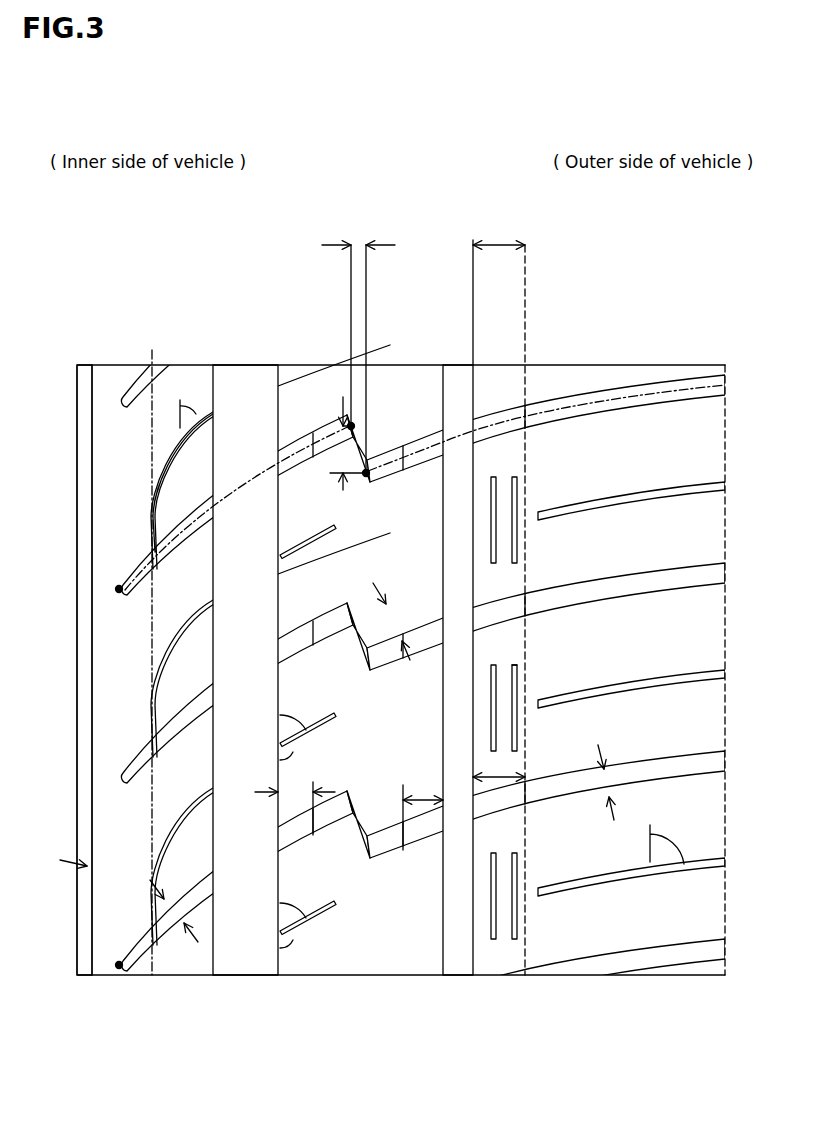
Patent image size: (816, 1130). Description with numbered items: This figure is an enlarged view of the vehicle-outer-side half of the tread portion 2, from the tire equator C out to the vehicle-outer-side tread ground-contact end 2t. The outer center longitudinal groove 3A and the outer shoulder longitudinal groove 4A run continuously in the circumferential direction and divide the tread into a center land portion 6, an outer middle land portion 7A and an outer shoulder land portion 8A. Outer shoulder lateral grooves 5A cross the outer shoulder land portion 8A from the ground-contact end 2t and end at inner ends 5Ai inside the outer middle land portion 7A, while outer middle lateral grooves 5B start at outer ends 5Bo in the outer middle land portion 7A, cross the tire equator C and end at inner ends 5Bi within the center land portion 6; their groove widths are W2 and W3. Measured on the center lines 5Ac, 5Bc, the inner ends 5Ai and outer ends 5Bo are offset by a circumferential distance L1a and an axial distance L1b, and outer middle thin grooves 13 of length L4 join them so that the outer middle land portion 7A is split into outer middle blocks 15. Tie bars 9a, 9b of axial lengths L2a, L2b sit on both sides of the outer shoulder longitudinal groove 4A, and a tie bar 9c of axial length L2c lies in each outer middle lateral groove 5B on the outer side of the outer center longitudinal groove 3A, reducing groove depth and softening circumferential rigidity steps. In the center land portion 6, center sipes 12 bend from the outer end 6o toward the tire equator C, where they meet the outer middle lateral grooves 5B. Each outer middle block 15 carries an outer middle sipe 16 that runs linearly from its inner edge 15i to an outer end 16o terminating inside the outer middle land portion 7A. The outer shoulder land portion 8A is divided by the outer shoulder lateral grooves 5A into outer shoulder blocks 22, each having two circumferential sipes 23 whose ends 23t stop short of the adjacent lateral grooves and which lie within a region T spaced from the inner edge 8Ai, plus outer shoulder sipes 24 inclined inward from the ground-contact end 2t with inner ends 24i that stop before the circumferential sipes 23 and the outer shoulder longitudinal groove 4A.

The tread portion 2 is at (688, 348).
The tread ground-contact end 2t is at (727, 925).
The outer center longitudinal groove 3A is at (251, 927).
The outer shoulder longitudinal groove 4A is at (458, 930).
The outer shoulder lateral grooves 5A is at (654, 400).
The outer middle lateral grooves 5B is at (190, 513).
The center line of outer shoulder lateral groove 5Ac is at (617, 392).
The inner end of outer shoulder lateral groove 5Ai is at (368, 470).
The center line of outer middle lateral groove 5Bc is at (242, 490).
The inner end of outer middle lateral groove 5Bi is at (116, 589).
The outer end of outer middle lateral groove 5Bo is at (350, 424).
The center land portion 6 is at (104, 400).
The outer end of center land portion 6o is at (236, 483).
The outer middle land portion 7A is at (305, 388).
The outer shoulder land portion 8A is at (592, 443).
The inner edge of outer shoulder land portion 8Ai is at (470, 400).
The tie bar 9a is at (503, 413).
The tie bar 9b is at (440, 832).
The tie bar 9c is at (290, 838).
The center sipes 12 is at (162, 465).
The outer middle thin grooves 13 is at (362, 445).
The outer middle blocks 15 is at (400, 548).
The inner edge of outer middle block 15i is at (265, 395).
The outer middle sipes 16 is at (205, 606).
The outer end of outer middle sipe 16o is at (392, 440).
The outer shoulder blocks 22 is at (654, 440).
The circumferential sipes 23 is at (518, 525).
The circumferential end of circumferential sipe 23t is at (518, 664).
The outer shoulder sipes 24 is at (562, 510).
The inner end of outer shoulder sipe 24i is at (535, 508).
The tire equator C is at (150, 650).
The region T is at (499, 597).
The circumferential distance L1a is at (329, 443).
The axial distance L1b is at (358, 346).
The axial length of tie bar L2a is at (499, 765).
The axial length of tie bar L2b is at (421, 810).
The axial length of tie bar L2c is at (295, 801).
The length of outer middle thin groove L4 is at (397, 621).
The groove width of outer shoulder lateral groove W2 is at (620, 778).
The groove width of outer middle lateral groove W3 is at (163, 935).